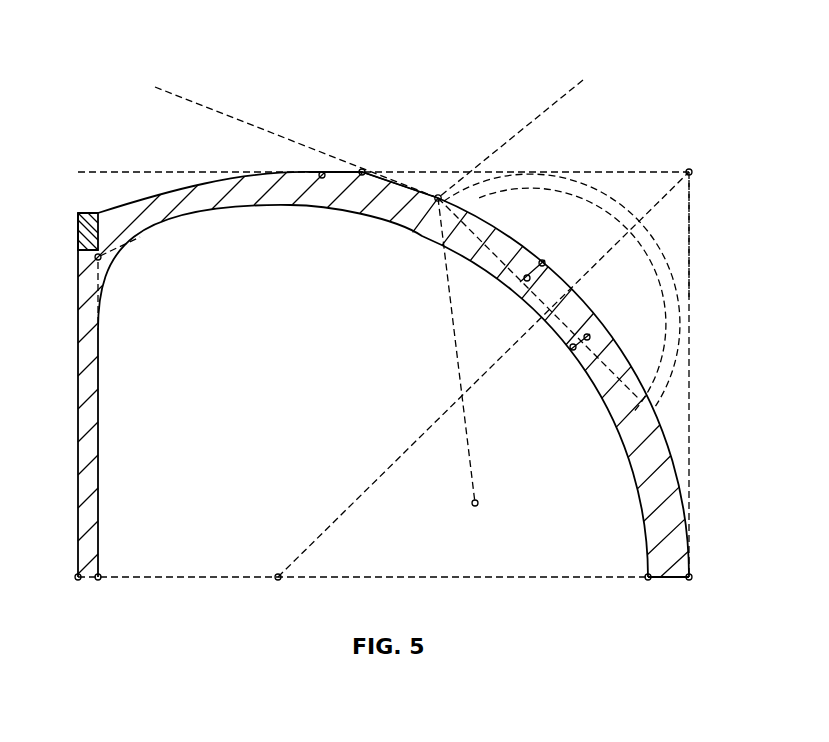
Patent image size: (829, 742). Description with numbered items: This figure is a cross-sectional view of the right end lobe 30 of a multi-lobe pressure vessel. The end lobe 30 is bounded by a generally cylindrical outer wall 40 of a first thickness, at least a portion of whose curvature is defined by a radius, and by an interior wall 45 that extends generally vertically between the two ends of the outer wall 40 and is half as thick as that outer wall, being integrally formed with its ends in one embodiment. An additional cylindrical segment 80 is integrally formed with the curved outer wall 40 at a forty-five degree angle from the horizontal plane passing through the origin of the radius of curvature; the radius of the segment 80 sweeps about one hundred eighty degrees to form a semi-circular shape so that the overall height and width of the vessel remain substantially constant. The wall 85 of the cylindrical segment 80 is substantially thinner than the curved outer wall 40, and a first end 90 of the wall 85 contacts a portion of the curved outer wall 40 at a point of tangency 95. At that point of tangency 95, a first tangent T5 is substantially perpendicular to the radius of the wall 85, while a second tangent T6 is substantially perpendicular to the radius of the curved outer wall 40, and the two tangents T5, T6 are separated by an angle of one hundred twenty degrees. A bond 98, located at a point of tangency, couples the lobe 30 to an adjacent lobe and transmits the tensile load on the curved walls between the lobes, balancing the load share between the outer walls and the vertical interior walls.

The right end lobe 30 is at (101, 68).
The cylindrical outer wall 40 is at (689, 561).
The interior wall 45 is at (98, 527).
The cylindrical segment 80 is at (678, 218).
The wall of the cylindrical segment 85 is at (673, 327).
The first end of the wall 90 is at (452, 192).
The point of tangency 95 is at (428, 216).
The bond 98 is at (78, 216).
The first tangent T5 is at (583, 82).
The second tangent T6 is at (170, 94).